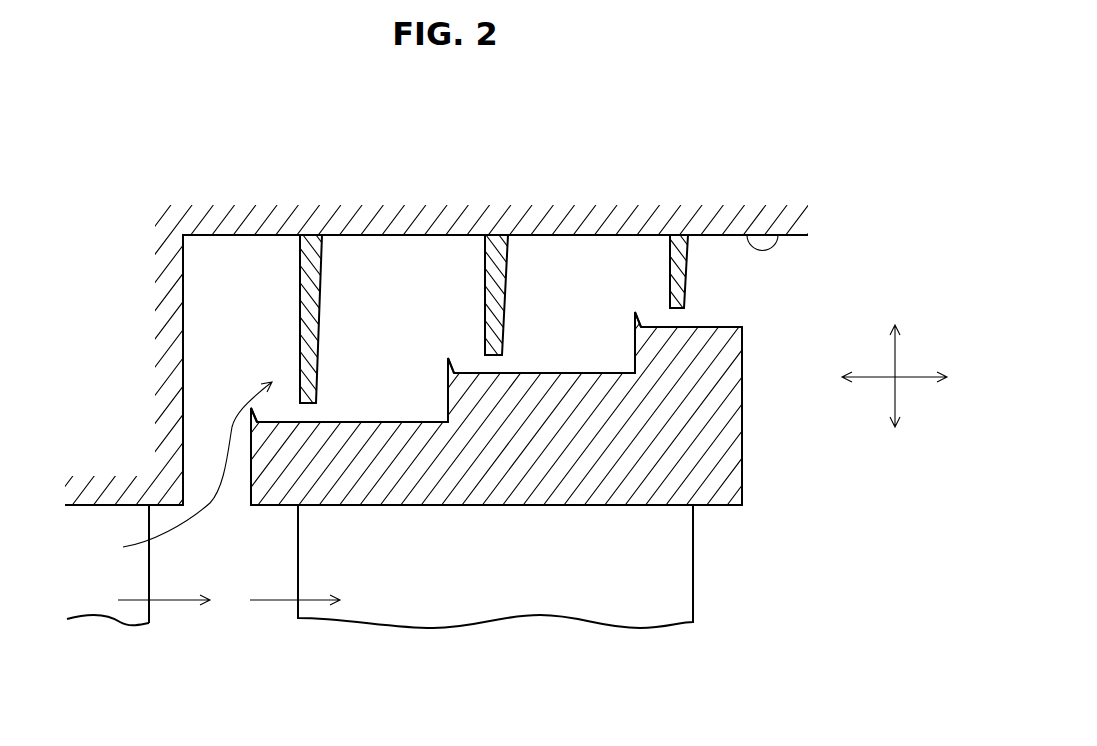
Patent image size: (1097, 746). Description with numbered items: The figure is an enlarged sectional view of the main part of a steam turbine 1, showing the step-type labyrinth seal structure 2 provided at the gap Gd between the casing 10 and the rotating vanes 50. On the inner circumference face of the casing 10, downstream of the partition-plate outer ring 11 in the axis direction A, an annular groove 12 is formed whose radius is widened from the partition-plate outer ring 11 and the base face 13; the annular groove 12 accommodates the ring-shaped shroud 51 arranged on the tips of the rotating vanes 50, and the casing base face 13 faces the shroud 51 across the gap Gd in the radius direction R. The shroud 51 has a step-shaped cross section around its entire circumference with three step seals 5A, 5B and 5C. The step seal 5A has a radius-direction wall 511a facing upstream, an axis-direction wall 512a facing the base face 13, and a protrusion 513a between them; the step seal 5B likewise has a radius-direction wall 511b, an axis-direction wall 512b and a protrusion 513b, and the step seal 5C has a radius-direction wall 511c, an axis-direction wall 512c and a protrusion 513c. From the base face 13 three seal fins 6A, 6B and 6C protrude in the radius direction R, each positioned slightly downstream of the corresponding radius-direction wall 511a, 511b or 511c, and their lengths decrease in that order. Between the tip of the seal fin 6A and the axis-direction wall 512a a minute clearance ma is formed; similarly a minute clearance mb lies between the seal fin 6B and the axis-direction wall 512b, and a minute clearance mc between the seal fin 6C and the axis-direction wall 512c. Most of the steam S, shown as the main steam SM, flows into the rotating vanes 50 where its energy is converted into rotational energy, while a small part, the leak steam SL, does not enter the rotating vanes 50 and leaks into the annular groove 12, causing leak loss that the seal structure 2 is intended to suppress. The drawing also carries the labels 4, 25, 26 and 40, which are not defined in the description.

The steam turbine 1 is at (715, 142).
The seal structure 2 is at (203, 323).
The step surface region 4 is at (413, 422).
The step seal 5A is at (393, 382).
The step seal 5B is at (588, 347).
The step seal 5C is at (727, 300).
The seal fin 6A is at (300, 262).
The seal fin 6B is at (485, 262).
The seal fin 6C is at (670, 255).
The casing 10 is at (205, 195).
The partition-plate outer ring 11 is at (87, 505).
The annular groove 12 is at (240, 511).
The base face 13 is at (773, 235).
The space between first and second fins 25 is at (405, 260).
The space between second and third fins 26 is at (555, 258).
The upstream flow passage 40 is at (90, 595).
The rotating vanes 50 is at (687, 597).
The shroud 51 is at (725, 507).
The radius-direction wall 511a is at (250, 470).
The radius-direction wall 511b is at (448, 398).
The radius-direction wall 511c is at (635, 340).
The axis-direction wall 512a is at (378, 422).
The axis-direction wall 512b is at (572, 373).
The axis-direction wall 512c is at (724, 327).
The protrusion 513a is at (258, 408).
The protrusion 513b is at (452, 357).
The protrusion 513c is at (634, 312).
The gap Gd is at (361, 272).
The minute clearance ma is at (318, 403).
The minute clearance mb is at (505, 355).
The minute clearance mc is at (688, 308).
The steam S is at (177, 605).
The main steam SM is at (270, 605).
The leak steam SL is at (250, 398).
The radius direction R is at (895, 362).
The axis direction A is at (883, 378).